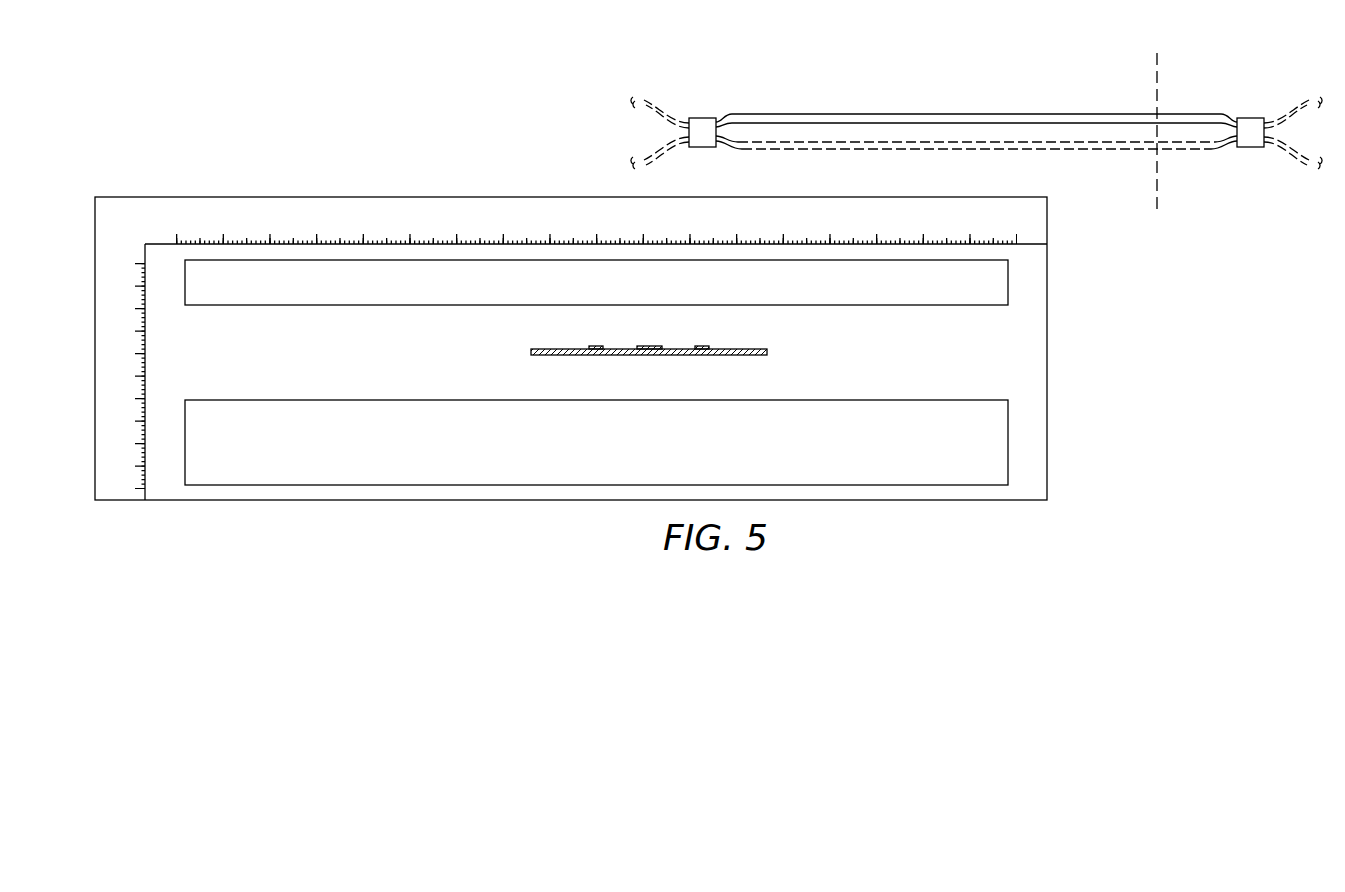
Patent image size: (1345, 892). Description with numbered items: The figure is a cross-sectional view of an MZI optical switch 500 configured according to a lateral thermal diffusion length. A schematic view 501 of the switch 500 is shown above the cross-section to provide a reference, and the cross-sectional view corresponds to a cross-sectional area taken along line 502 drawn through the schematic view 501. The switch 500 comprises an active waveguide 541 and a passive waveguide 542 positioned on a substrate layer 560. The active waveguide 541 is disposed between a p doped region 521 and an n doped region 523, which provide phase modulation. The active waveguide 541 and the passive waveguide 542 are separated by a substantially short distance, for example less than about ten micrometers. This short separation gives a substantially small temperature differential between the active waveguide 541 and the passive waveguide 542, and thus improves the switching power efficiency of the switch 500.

The MZI optical switch 500 is at (175, 160).
The schematic view 501 is at (858, 98).
The line 502 is at (1159, 76).
The p doped region 521 is at (541, 359).
The n doped region 523 is at (650, 361).
The active waveguide 541 is at (597, 345).
The passive waveguide 542 is at (705, 345).
The substrate layer 560 is at (986, 443).